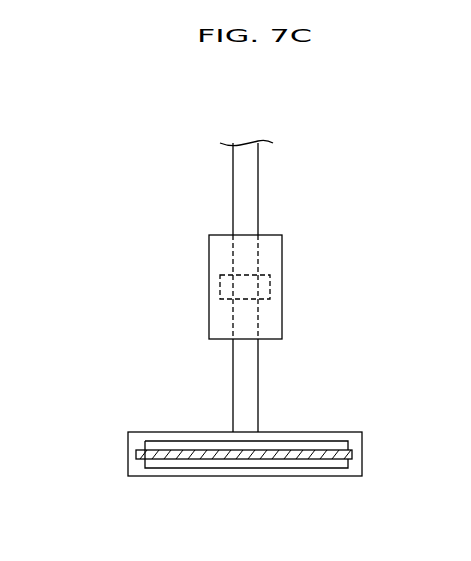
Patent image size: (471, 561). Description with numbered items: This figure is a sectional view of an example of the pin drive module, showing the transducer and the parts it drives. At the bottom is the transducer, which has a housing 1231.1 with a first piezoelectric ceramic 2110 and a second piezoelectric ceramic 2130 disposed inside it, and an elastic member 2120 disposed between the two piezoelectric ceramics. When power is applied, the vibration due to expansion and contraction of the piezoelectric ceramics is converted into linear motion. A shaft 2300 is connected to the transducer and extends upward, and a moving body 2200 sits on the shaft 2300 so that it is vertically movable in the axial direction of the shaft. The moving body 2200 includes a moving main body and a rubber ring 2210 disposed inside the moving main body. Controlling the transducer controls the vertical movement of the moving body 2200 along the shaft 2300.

The shaft 2300 is at (248, 188).
The moving body 2200 is at (272, 319).
The rubber ring 2210 is at (270, 287).
The first piezoelectric ceramic 2110 is at (338, 463).
The second piezoelectric ceramic 2130 is at (342, 444).
The elastic member 2120 is at (352, 454).
The housing 1231.1 is at (136, 452).